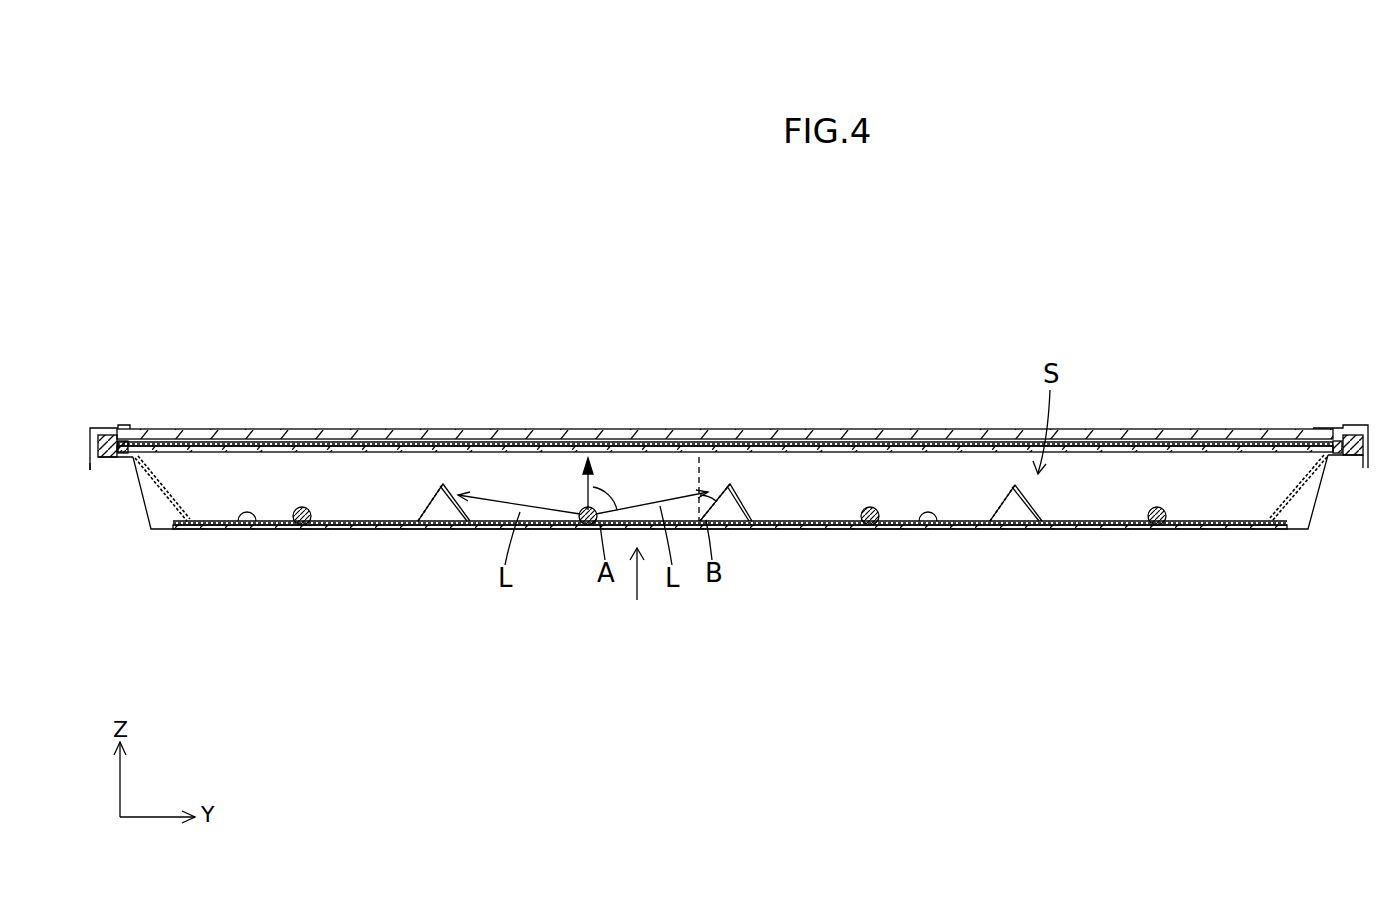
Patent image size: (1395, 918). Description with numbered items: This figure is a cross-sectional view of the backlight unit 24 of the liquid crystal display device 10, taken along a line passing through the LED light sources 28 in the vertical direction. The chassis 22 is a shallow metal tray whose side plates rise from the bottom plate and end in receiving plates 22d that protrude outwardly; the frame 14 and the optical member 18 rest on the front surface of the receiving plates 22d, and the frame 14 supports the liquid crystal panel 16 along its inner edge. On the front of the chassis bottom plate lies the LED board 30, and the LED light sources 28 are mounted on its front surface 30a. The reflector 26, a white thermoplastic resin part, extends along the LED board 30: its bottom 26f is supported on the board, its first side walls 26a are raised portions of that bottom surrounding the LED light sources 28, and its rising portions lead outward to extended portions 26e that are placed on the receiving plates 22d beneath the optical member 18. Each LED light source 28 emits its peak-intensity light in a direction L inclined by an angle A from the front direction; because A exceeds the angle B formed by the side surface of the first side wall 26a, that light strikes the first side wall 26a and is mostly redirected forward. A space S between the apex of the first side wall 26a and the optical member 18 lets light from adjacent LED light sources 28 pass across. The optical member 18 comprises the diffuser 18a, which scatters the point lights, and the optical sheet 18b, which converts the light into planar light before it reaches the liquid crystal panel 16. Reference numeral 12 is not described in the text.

The liquid crystal display device 10 is at (760, 303).
The frame (right) 12 is at (124, 440).
The frame 14 is at (104, 440).
The liquid crystal panel 16 is at (613, 431).
The optical member 18 is at (725, 385).
The diffuser 18a is at (888, 442).
The optical sheet 18b is at (868, 367).
The chassis 22 is at (730, 529).
The receiving plate 22d is at (116, 462).
The backlight unit 24 is at (639, 592).
The reflector 26 is at (737, 493).
The first side wall 26a is at (441, 523).
The extended portion 26e is at (1334, 440).
The bottom 26f is at (928, 526).
The LED light source 28 is at (298, 510).
The LED board 30 is at (730, 557).
The front surface of the LED board 30a is at (241, 526).